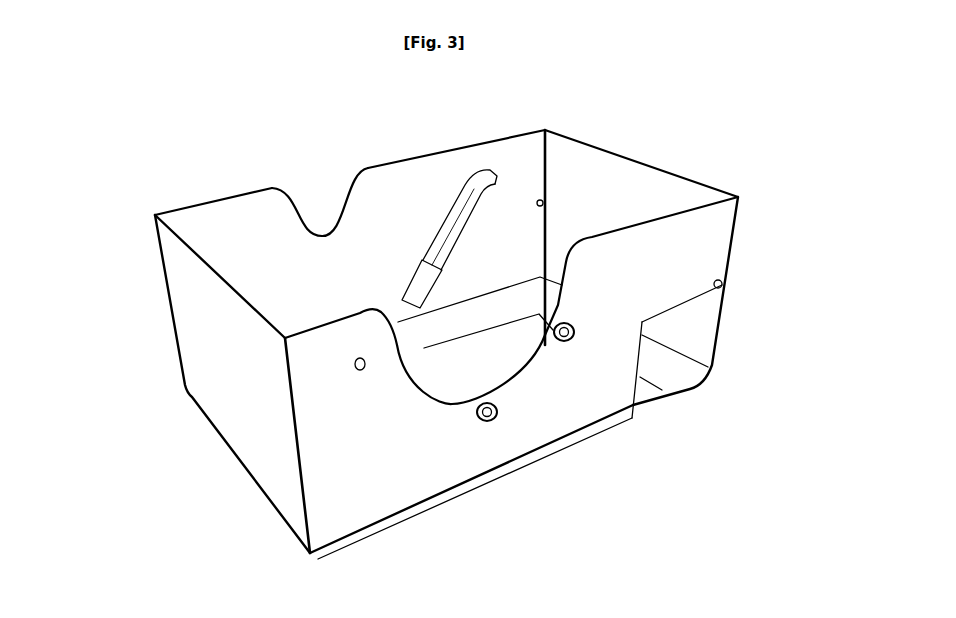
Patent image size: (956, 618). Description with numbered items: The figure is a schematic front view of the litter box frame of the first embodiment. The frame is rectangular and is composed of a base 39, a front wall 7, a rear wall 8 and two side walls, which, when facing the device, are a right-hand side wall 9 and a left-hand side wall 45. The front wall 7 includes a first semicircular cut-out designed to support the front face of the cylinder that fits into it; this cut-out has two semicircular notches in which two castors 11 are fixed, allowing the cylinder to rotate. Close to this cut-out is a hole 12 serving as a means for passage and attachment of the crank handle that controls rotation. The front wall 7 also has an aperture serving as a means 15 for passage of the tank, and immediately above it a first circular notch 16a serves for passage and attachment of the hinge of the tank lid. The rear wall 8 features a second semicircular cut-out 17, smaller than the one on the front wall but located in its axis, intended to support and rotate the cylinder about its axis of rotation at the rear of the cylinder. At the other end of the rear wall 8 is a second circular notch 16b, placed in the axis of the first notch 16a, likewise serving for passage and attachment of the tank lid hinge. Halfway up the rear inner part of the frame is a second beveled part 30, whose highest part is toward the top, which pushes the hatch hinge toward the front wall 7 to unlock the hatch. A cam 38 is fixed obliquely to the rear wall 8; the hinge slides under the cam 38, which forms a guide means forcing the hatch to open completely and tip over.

The front wall 7 is at (413, 470).
The rear wall 8 is at (232, 197).
The right-hand side wall 9 is at (643, 162).
The castors 11 is at (490, 414).
The hole 12 is at (356, 371).
The means for passage of the tank 15 is at (643, 355).
The first circular notch 16a is at (724, 283).
The second circular notch 16b is at (538, 200).
The second semicircular cut-out 17 is at (324, 228).
The second beveled part 30 is at (418, 266).
The cam 38 is at (457, 198).
The base 39 is at (420, 333).
The left-hand side wall 45 is at (240, 357).